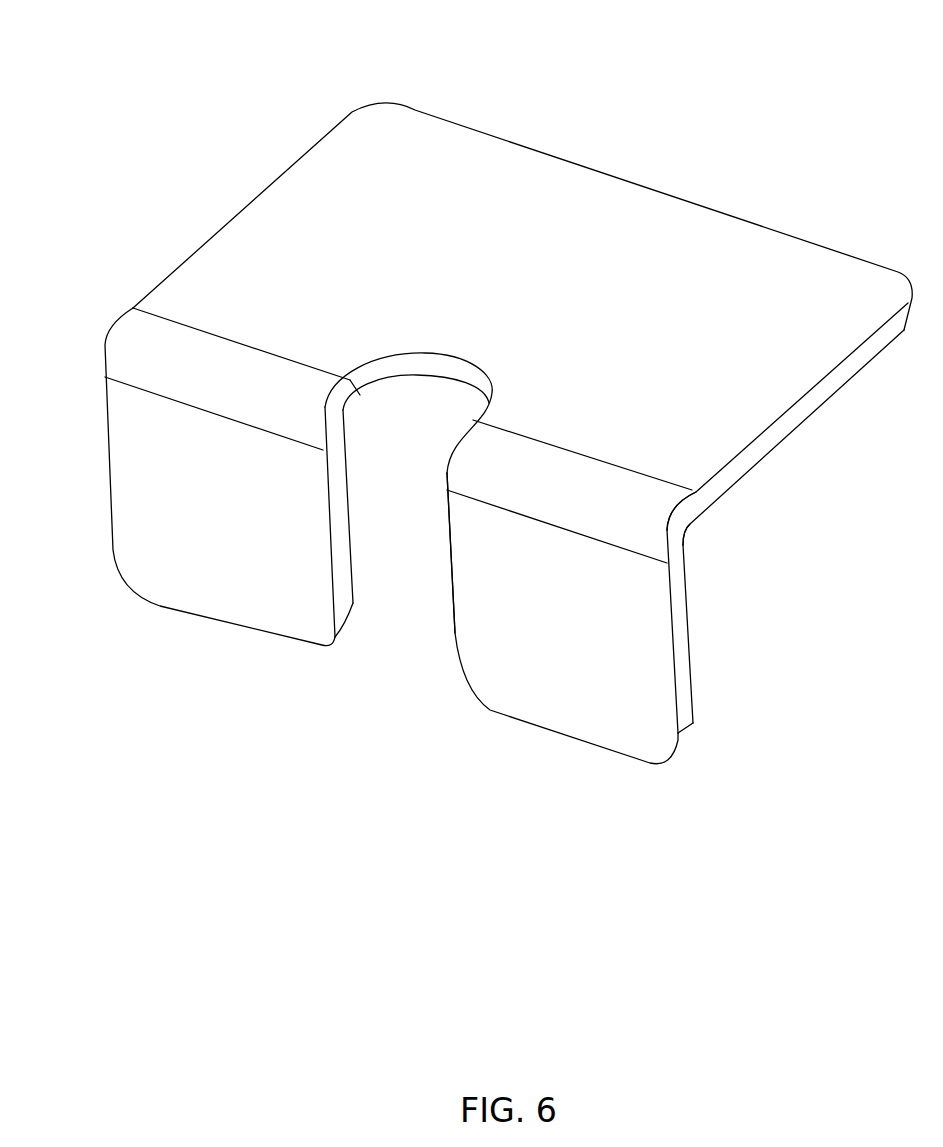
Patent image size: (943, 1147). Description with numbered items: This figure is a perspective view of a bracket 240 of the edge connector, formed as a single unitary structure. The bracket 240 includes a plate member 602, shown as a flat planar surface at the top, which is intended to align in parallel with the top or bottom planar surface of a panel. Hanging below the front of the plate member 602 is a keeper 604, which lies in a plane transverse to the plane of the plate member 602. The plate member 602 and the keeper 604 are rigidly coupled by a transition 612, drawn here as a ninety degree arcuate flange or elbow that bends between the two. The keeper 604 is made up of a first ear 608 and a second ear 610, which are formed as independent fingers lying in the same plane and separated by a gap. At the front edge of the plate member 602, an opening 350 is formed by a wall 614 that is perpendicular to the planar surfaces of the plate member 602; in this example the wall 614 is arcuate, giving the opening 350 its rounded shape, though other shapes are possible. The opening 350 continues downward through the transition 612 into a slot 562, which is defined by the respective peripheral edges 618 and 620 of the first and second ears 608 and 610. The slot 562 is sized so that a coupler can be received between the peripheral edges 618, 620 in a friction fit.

The bracket 240 is at (565, 88).
The opening 350 is at (405, 368).
The slot 562 is at (405, 594).
The plate member 602 is at (723, 285).
The keeper 604 is at (733, 670).
The first ear 608 is at (215, 533).
The second ear 610 is at (575, 657).
The transition 612 is at (680, 533).
The wall 614 is at (452, 367).
The peripheral edge of first ear 618 is at (340, 545).
The peripheral edge of second ear 620 is at (450, 637).